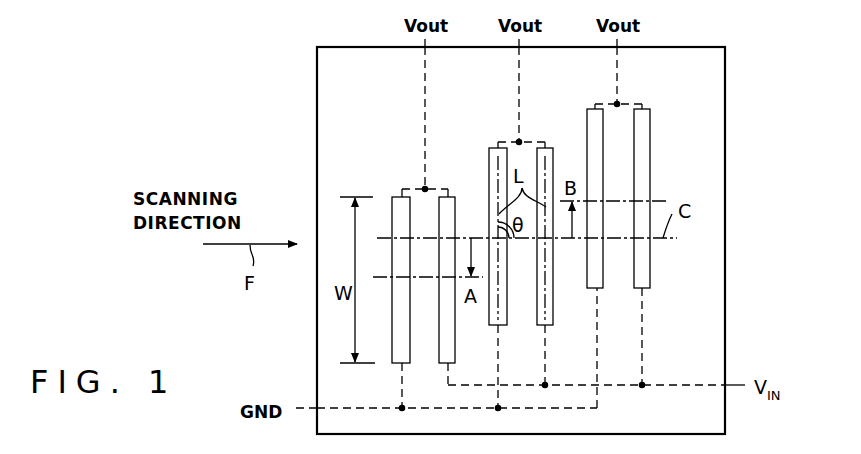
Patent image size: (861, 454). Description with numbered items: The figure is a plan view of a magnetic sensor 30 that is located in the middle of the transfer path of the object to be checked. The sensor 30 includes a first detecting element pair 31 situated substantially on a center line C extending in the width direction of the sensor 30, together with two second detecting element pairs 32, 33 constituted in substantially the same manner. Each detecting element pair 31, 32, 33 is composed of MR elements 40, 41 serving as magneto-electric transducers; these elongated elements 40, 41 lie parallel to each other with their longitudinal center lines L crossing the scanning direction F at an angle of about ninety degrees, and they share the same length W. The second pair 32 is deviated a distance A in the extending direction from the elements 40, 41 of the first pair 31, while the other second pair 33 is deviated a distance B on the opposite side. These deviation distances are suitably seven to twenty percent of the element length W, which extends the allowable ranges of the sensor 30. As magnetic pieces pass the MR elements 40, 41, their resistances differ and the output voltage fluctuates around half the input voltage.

The magnetic sensor 30 is at (315, 164).
The first detecting element pair 31 is at (515, 139).
The second detecting element pair 32 is at (421, 186).
The second detecting element pair 33 is at (622, 101).
The MR element 40 is at (392, 350).
The MR element 41 is at (455, 336).